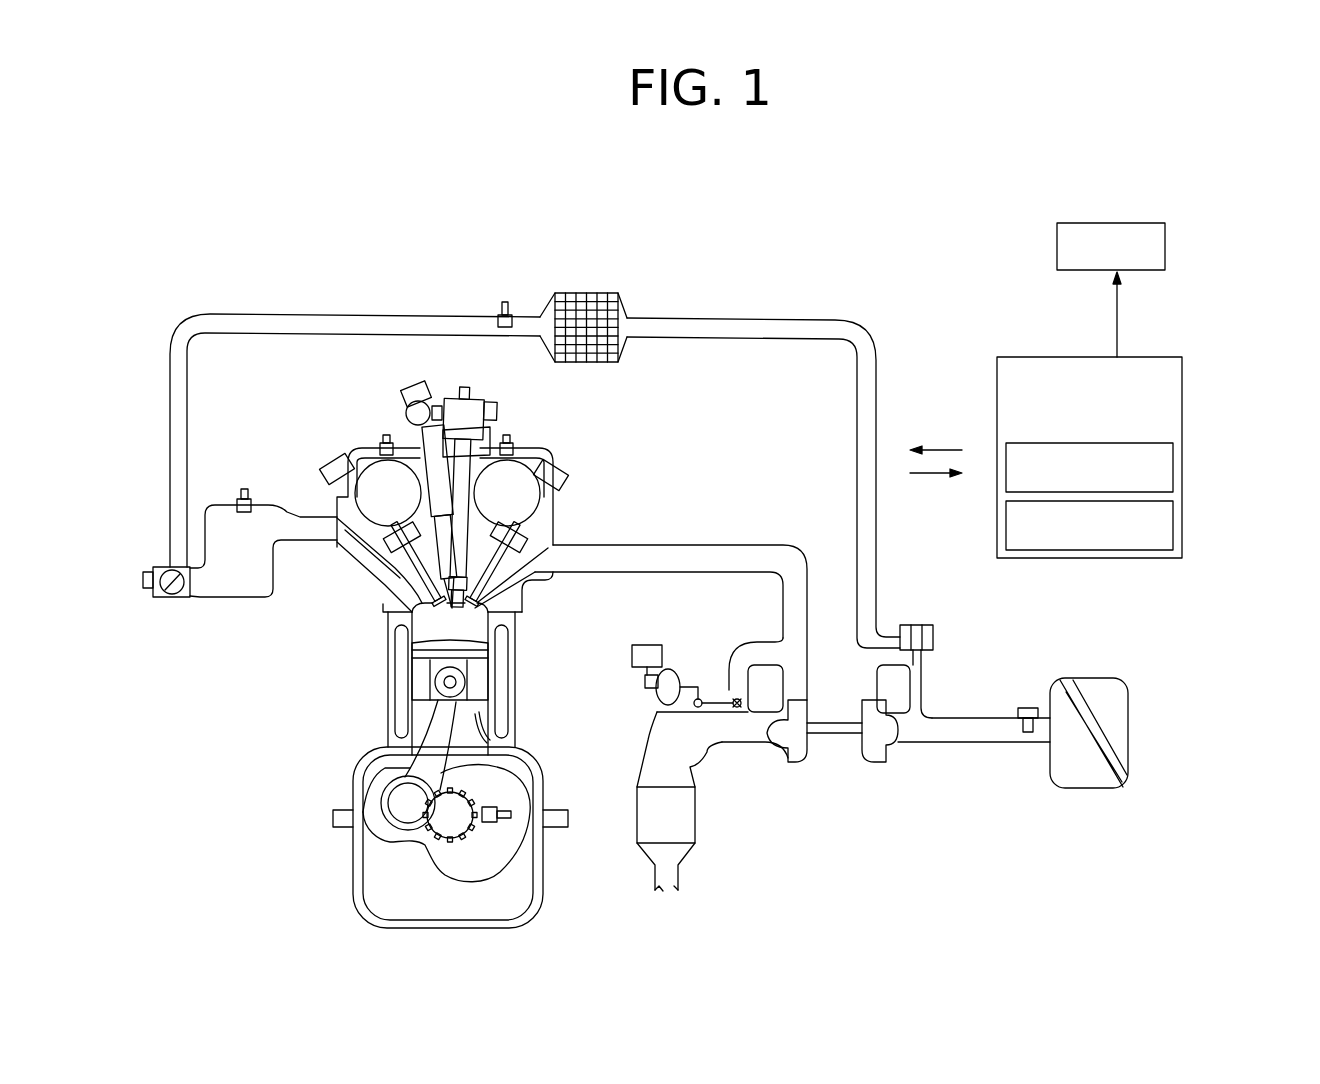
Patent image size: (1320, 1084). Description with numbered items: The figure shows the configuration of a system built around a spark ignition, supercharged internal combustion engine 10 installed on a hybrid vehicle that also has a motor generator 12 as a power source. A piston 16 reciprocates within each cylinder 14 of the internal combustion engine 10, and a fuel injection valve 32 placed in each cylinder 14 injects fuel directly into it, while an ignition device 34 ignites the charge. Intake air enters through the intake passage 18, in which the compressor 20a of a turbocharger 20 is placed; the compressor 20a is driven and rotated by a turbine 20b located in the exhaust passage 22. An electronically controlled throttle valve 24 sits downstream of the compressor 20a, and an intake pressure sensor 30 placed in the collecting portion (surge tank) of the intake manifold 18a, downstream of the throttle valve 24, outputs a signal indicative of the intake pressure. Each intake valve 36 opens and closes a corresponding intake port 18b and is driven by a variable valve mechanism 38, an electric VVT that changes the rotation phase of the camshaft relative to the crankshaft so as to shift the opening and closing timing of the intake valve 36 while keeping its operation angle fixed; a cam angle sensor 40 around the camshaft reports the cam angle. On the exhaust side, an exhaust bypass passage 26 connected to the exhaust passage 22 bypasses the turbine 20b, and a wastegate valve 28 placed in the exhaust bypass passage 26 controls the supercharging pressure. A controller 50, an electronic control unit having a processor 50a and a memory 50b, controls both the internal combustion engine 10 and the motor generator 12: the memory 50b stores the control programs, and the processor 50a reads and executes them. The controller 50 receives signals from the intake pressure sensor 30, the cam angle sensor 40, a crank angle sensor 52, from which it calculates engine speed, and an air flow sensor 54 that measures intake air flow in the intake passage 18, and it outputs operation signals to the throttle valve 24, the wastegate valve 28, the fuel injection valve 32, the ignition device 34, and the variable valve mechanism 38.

The internal combustion engine 10 is at (606, 505).
The motor generator 12 is at (1110, 222).
The cylinder 14 is at (438, 633).
The piston 16 is at (427, 655).
The intake passage 18 is at (762, 300).
The intake manifold 18a is at (227, 586).
The intake port 18b is at (415, 587).
The turbocharger 20 is at (838, 778).
The compressor 20a is at (889, 764).
The turbine 20b is at (795, 752).
The exhaust passage 22 is at (720, 545).
The throttle valve 24 is at (156, 600).
The exhaust bypass passage 26 is at (748, 653).
The wastegate valve 28 is at (732, 692).
The intake pressure sensor 30 is at (243, 487).
The fuel injection valve 32 is at (417, 433).
The ignition device 34 is at (467, 442).
The intake valve 36 is at (378, 590).
The variable valve mechanism 38 is at (370, 453).
The cam angle sensor 40 is at (373, 482).
The controller 50 is at (1129, 421).
The processor 50a is at (1173, 468).
The memory 50b is at (1173, 528).
The crank angle sensor 52 is at (503, 823).
The air flow sensor 54 is at (1033, 707).